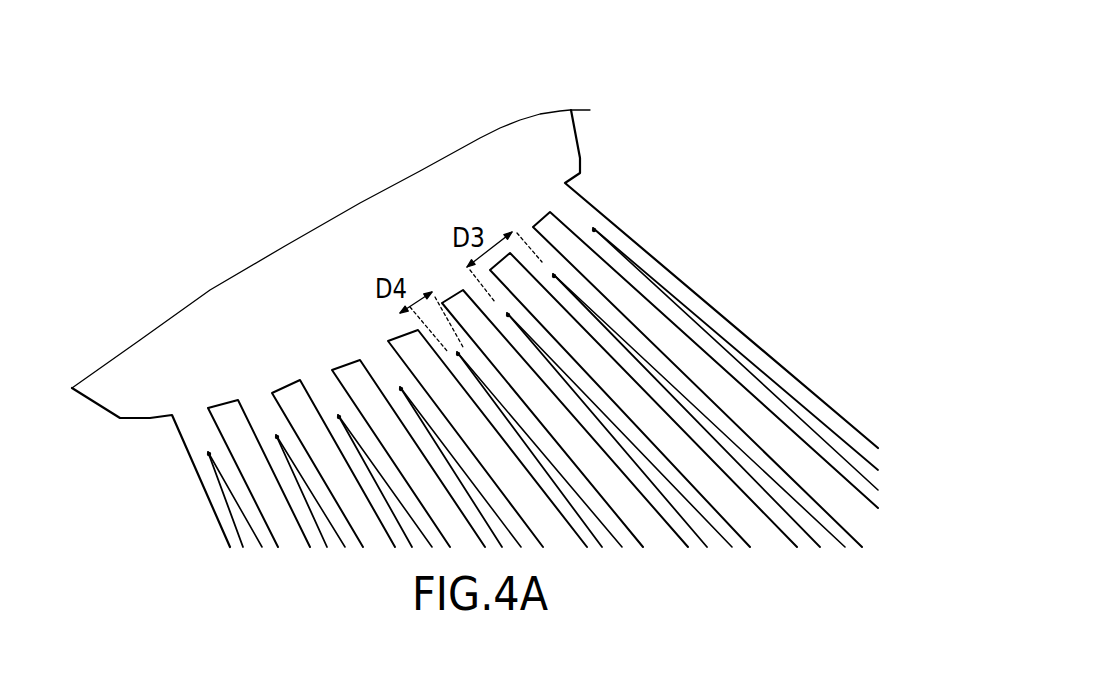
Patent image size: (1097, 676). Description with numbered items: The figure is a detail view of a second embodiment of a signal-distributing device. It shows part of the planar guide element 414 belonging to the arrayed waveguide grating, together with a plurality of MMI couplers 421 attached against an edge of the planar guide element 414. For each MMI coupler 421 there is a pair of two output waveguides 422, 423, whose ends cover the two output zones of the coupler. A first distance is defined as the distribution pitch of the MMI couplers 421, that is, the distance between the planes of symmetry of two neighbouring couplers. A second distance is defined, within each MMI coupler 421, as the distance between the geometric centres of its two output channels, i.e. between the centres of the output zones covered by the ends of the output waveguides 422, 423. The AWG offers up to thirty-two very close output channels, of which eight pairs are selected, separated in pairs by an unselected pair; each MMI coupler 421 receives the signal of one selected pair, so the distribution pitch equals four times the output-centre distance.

The planar guide element 414 is at (334, 230).
The MMI coupler 421 is at (543, 304).
The output waveguide 422 is at (542, 304).
The output waveguide 423 is at (590, 387).